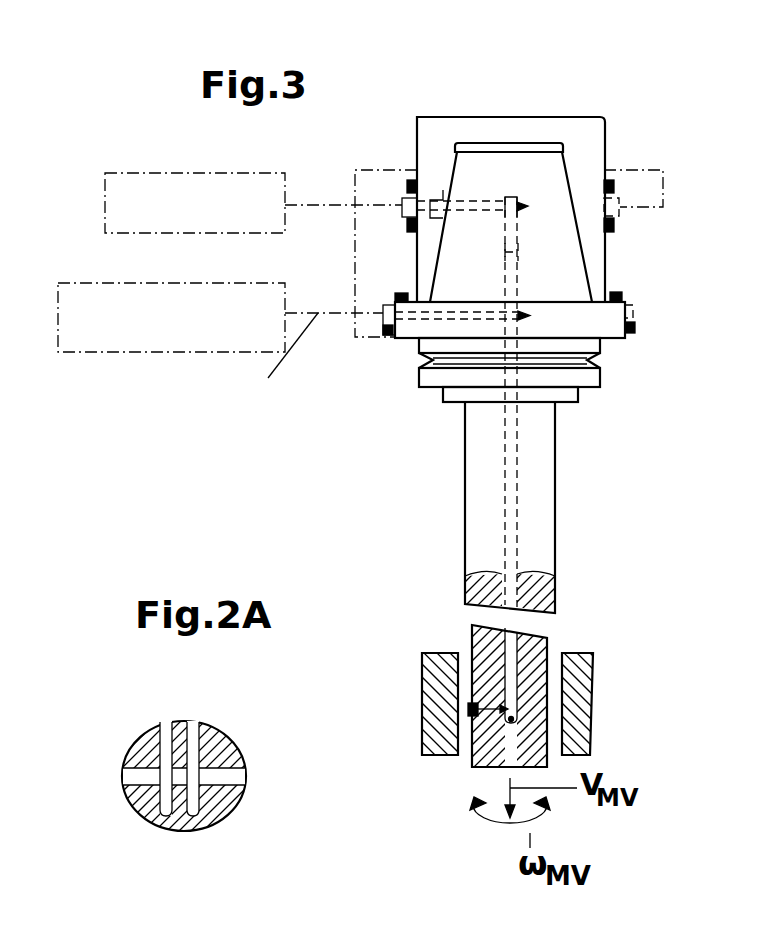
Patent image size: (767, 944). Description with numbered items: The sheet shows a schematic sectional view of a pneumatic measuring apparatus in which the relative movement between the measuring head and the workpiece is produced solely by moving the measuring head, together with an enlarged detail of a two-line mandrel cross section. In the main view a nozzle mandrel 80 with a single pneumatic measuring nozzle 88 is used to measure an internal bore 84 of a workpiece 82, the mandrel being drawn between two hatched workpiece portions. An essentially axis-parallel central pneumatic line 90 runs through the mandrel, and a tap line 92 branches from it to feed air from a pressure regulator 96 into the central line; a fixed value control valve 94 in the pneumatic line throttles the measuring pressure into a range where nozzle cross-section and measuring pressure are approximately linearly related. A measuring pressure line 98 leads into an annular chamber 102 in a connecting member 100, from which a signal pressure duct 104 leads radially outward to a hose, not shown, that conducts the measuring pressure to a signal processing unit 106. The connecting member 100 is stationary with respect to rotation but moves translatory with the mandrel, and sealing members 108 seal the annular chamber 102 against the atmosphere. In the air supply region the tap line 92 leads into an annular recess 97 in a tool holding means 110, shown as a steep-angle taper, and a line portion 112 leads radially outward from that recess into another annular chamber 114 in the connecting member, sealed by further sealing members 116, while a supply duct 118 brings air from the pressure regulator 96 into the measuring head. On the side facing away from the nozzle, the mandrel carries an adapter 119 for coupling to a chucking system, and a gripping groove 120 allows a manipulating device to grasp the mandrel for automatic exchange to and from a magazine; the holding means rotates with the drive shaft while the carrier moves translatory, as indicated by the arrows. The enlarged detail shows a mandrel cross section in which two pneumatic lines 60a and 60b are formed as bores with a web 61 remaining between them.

In FIG. 2A, the pneumatic line 60a is at (163, 728).
In FIG. 2A, the pneumatic line 60b is at (193, 743).
In FIG. 2A, the web 61 is at (180, 782).
In FIG. 3, the nozzle mandrel 80 is at (538, 647).
In FIG. 3, the workpiece 82 is at (582, 737).
In FIG. 3, the internal bore 84 is at (465, 743).
In FIG. 3, the pneumatic measuring nozzle 88 is at (464, 721).
In FIG. 3, the central pneumatic line 90 is at (510, 590).
In FIG. 3, the tap line 92 is at (486, 200).
In FIG. 3, the fixed value control valve 94 is at (520, 252).
In FIG. 3, the pressure regulator 96 is at (191, 170).
In FIG. 3, the annular recess 97 is at (447, 150).
In FIG. 3, the measuring pressure line 98 is at (412, 323).
In FIG. 3, the connecting member 100 is at (643, 213).
In FIG. 3, the annular chamber 102 is at (383, 325).
In FIG. 3, the signal pressure duct 104 is at (355, 318).
In FIG. 3, the signal processing unit 106 is at (192, 353).
In FIG. 3, the sealing members 108 is at (622, 297).
In FIG. 3, the tool holding means 110 is at (590, 142).
In FIG. 3, the line portion 112 is at (431, 175).
In FIG. 3, the annular chamber 114 is at (618, 203).
In FIG. 3, the sealing members 116 is at (612, 186).
In FIG. 3, the supply duct 118 is at (364, 205).
In FIG. 3, the adapter 119 is at (562, 281).
In FIG. 3, the gripping groove 120 is at (600, 370).